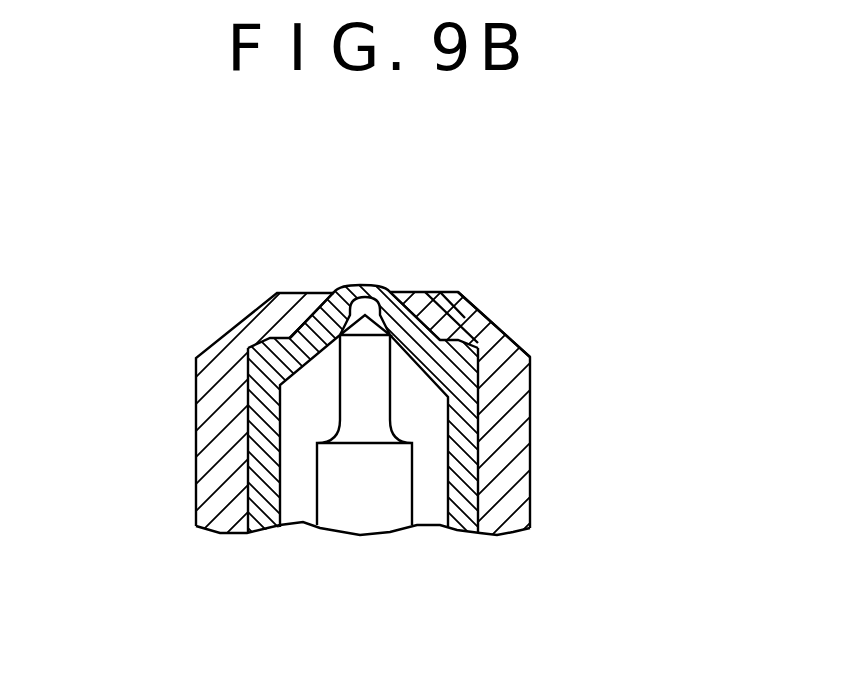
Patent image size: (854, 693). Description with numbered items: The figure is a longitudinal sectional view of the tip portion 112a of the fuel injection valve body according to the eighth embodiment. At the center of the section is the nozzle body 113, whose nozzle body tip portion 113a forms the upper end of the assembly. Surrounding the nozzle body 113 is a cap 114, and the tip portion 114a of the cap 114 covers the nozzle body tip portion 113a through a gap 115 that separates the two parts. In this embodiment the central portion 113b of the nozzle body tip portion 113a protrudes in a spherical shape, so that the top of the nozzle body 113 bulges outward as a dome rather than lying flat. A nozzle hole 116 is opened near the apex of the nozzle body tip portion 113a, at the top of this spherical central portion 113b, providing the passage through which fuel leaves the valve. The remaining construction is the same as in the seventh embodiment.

The tip portion of the fuel injection valve body 112a is at (210, 270).
The nozzle body 113 is at (465, 517).
The nozzle body tip portion 113a is at (337, 291).
The central portion of the nozzle body tip portion 113b is at (395, 287).
The cap 114 is at (511, 517).
The tip portion of the cap 114a is at (483, 323).
The gap 115 is at (460, 310).
The nozzle hole 116 is at (378, 285).